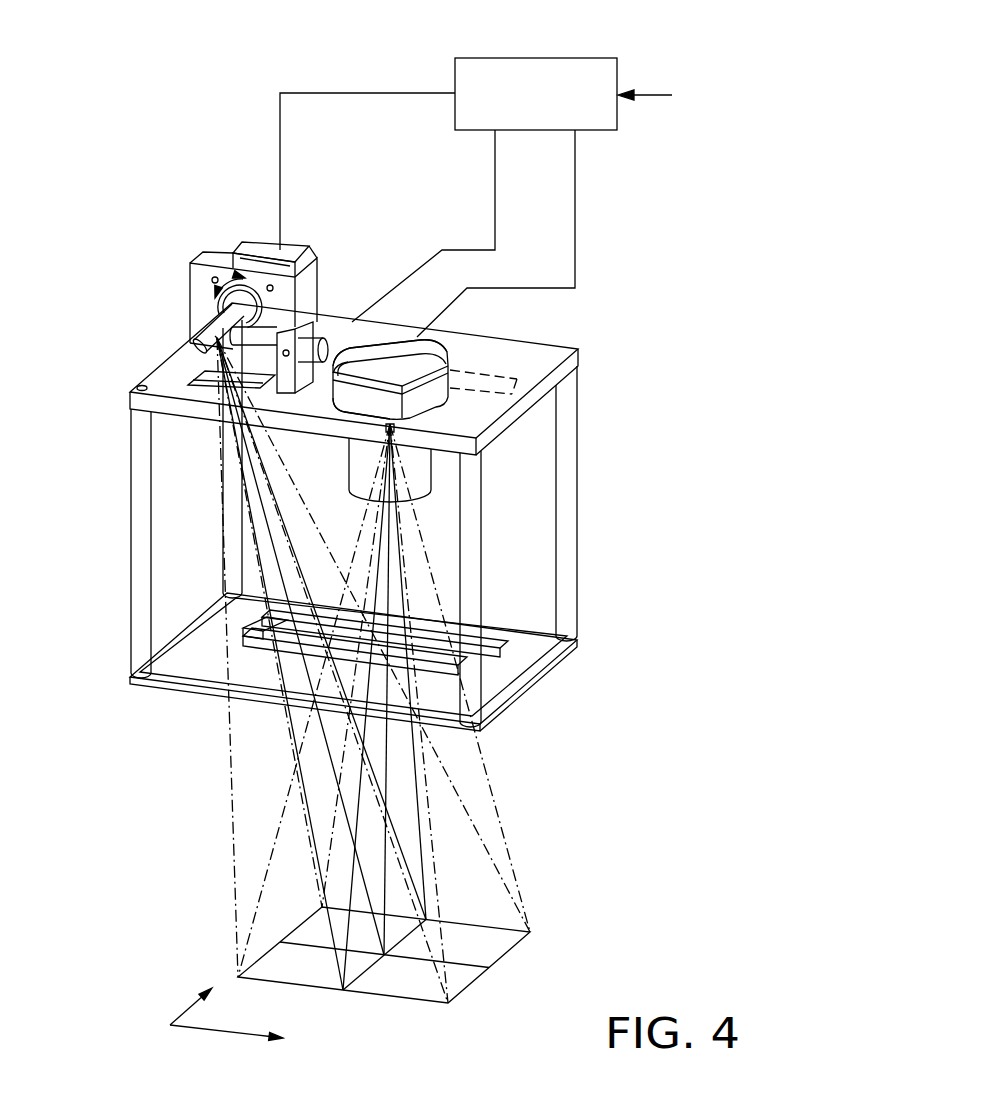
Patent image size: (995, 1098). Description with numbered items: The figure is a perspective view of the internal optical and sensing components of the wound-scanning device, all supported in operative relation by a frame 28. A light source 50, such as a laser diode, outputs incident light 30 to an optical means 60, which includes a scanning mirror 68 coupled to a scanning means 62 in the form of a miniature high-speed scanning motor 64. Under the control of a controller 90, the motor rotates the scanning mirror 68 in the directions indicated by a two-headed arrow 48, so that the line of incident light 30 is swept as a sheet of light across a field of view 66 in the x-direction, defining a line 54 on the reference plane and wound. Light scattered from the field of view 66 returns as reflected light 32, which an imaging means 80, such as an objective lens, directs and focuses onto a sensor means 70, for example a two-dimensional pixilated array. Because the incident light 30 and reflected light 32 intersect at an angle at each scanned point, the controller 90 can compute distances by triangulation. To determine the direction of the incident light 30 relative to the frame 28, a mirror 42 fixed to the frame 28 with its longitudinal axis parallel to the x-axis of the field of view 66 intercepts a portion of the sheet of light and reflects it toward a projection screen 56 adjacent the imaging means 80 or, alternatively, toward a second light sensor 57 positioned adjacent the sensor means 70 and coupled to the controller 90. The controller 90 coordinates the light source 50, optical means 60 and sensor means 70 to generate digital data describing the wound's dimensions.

The optical means 60 is at (152, 158).
The controller 90 is at (490, 58).
The scanning motor 64 is at (283, 250).
The two-headed arrow 48 is at (192, 272).
The light source 50 is at (274, 329).
The scanning means 62 is at (150, 300).
The scanning mirror 68 is at (190, 344).
The sensor means 70 is at (410, 350).
The projection screen 56 is at (572, 347).
The second light sensor 57 is at (520, 375).
The frame 28 is at (580, 455).
The imaging means 80 is at (436, 470).
The mirror 42 is at (490, 658).
The incident light 30 is at (313, 787).
The reflected light 32 is at (403, 785).
The field of view 66 is at (505, 963).
The line 54 is at (362, 973).